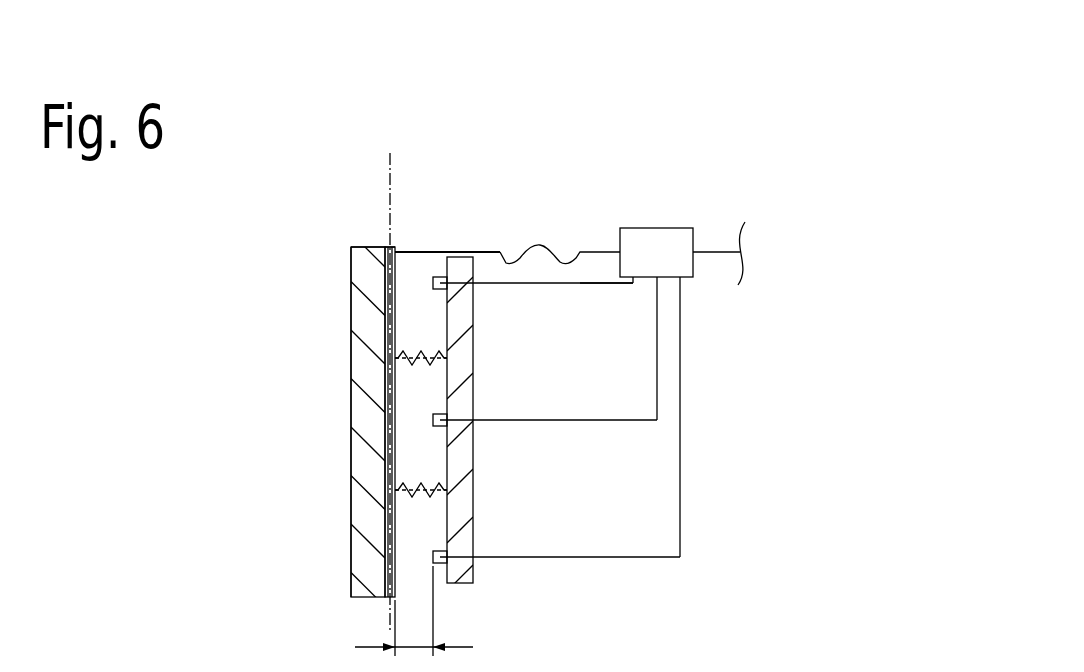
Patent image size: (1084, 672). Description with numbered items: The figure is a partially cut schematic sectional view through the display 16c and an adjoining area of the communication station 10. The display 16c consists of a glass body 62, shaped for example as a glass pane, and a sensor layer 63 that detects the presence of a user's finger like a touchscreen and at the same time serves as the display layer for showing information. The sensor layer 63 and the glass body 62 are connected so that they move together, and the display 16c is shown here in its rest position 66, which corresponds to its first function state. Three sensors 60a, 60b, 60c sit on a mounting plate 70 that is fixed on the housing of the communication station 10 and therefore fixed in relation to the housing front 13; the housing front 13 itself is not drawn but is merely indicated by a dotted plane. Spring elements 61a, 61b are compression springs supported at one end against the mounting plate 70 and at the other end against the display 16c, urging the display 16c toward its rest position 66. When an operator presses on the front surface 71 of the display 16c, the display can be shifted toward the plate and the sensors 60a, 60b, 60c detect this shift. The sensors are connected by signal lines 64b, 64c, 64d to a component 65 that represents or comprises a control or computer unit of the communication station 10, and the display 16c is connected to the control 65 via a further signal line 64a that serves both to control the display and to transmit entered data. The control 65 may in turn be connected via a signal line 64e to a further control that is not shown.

The communication station 10 is at (590, 124).
The housing front 13 is at (391, 169).
The display 16c is at (366, 264).
The sensor 60a is at (424, 272).
The sensor 60b is at (440, 420).
The sensor 60c is at (433, 556).
The spring element 61a is at (398, 358).
The spring element 61b is at (400, 491).
The glass body 62 is at (362, 307).
The sensor layer 63 is at (388, 247).
The signal line 64a is at (583, 250).
The signal line 64b is at (605, 282).
The signal line 64c is at (657, 378).
The signal line 64d is at (680, 483).
The signal line 64e is at (716, 252).
The control 65 is at (655, 253).
The rest position 66 is at (328, 236).
The mounting plate 70 is at (458, 318).
The front surface 71 is at (346, 394).